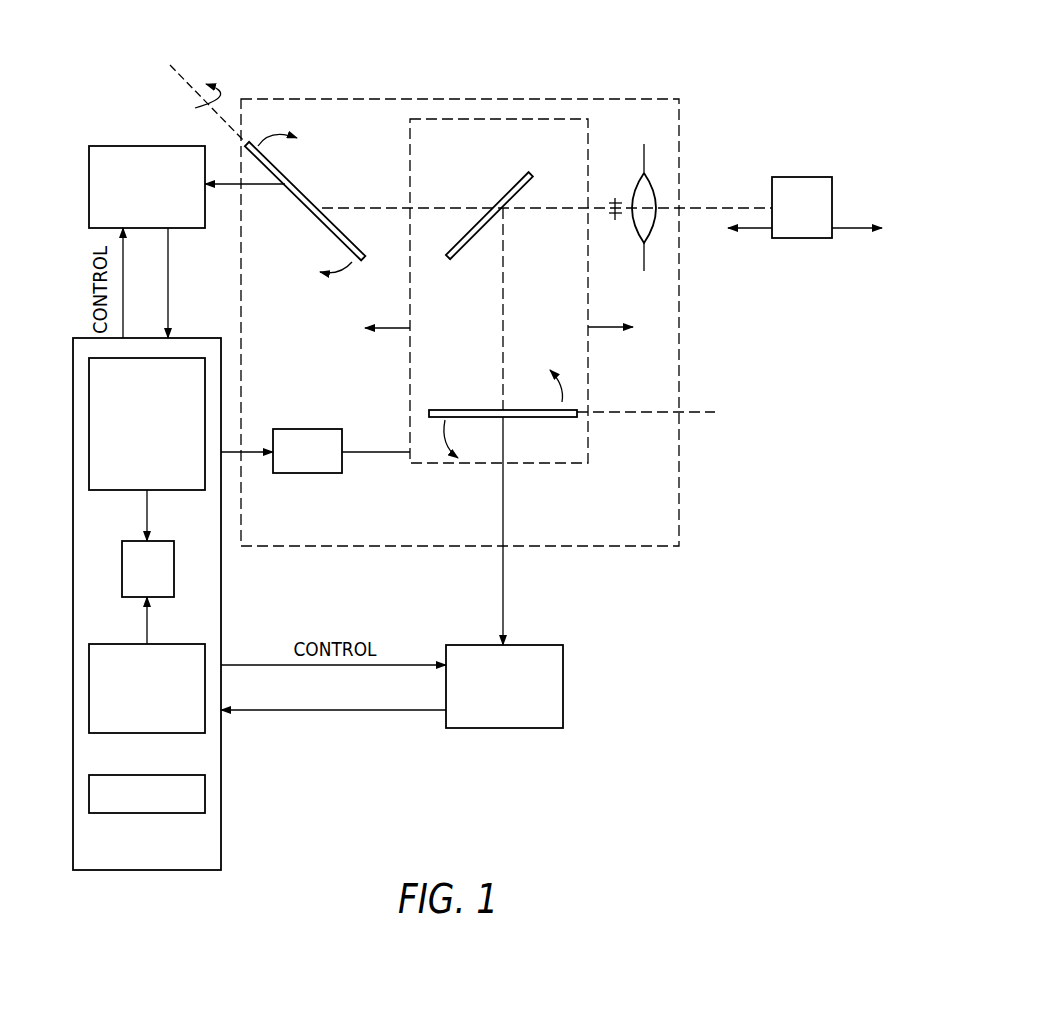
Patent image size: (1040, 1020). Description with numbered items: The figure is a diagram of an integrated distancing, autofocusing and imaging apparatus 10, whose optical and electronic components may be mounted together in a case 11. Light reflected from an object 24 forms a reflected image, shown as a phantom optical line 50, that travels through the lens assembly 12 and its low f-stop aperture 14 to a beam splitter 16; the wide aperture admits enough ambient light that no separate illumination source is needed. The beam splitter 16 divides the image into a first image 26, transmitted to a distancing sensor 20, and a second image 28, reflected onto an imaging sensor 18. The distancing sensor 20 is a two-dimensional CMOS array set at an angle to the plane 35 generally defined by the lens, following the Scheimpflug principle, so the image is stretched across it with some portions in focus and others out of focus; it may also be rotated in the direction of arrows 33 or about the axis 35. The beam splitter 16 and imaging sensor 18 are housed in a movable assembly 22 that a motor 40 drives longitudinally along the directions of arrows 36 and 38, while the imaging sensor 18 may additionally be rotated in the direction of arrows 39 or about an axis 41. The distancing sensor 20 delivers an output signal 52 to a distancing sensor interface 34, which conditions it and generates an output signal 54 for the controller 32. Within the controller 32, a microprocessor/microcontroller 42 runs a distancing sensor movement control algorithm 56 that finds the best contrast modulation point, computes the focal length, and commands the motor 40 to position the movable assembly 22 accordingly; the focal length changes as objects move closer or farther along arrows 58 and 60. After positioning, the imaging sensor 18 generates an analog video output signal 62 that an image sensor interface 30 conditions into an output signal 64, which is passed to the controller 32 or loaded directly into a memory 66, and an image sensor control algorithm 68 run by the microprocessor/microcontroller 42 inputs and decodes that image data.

The integrated distancing, autofocusing and imaging apparatus 10 is at (742, 82).
The case 11 is at (587, 99).
The lens assembly 12 is at (652, 190).
The low f-stop aperture 14 is at (616, 197).
The beam splitter 16 is at (513, 188).
The imaging sensor 18 is at (477, 418).
The distancing sensor 20 is at (318, 220).
The movable assembly 22 is at (550, 465).
The object 24 is at (800, 177).
The first image 26 is at (385, 207).
The second image 28 is at (498, 340).
The image sensor interface 30 is at (503, 728).
The controller 32 is at (73, 418).
The arrows 33 is at (306, 202).
The distancing sensor interface 34 is at (143, 146).
The plane / axis 35 is at (178, 77).
The arrow 36 is at (372, 329).
The arrow 38 is at (625, 327).
The arrows 39 is at (501, 406).
The motor 40 is at (307, 473).
The axis 41 is at (718, 442).
The microprocessor/microcontroller 42 is at (122, 563).
The phantom optical line 50 is at (750, 208).
The output signal 52 is at (245, 172).
The output signal 54 is at (172, 265).
The distancing sensor movement control algorithm 56 is at (89, 462).
The arrow 58 is at (734, 228).
The arrow 60 is at (871, 228).
The analog video output signal 62 is at (507, 484).
The output signal 64 is at (333, 697).
The memory 66 is at (89, 793).
The image sensor control algorithm 68 is at (89, 690).